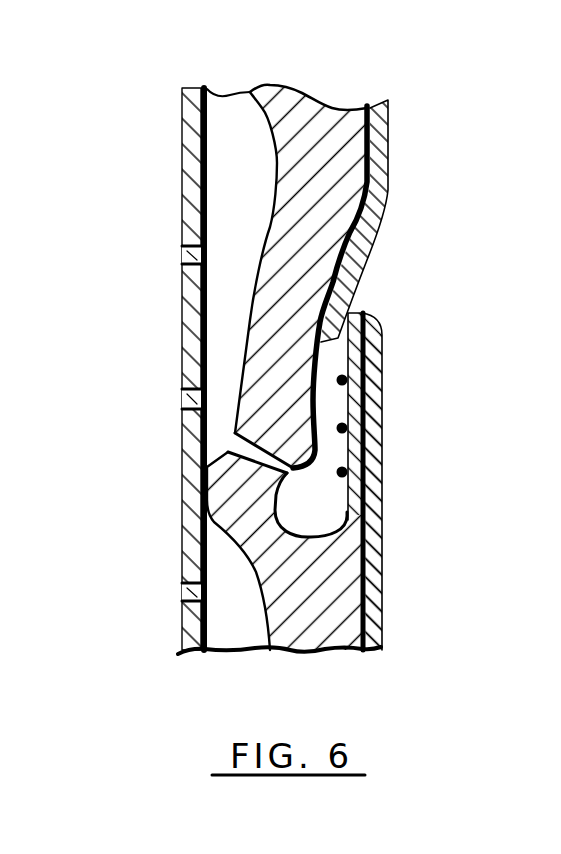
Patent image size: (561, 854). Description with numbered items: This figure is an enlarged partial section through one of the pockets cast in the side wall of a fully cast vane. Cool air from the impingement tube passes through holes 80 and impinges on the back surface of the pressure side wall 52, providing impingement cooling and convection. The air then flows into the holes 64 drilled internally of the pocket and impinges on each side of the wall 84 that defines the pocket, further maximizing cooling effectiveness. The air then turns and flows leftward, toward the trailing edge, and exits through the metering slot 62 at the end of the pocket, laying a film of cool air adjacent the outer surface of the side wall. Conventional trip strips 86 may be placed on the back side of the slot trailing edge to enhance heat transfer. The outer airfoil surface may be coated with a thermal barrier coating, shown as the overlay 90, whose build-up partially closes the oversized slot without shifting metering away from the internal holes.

The pressure side wall 52 is at (329, 108).
The metering slot 62 is at (350, 312).
The holes 64 is at (217, 501).
The holes 80 is at (183, 254).
The wall 84 is at (350, 530).
The trip strips 86 is at (344, 376).
The overlay 90 is at (386, 175).